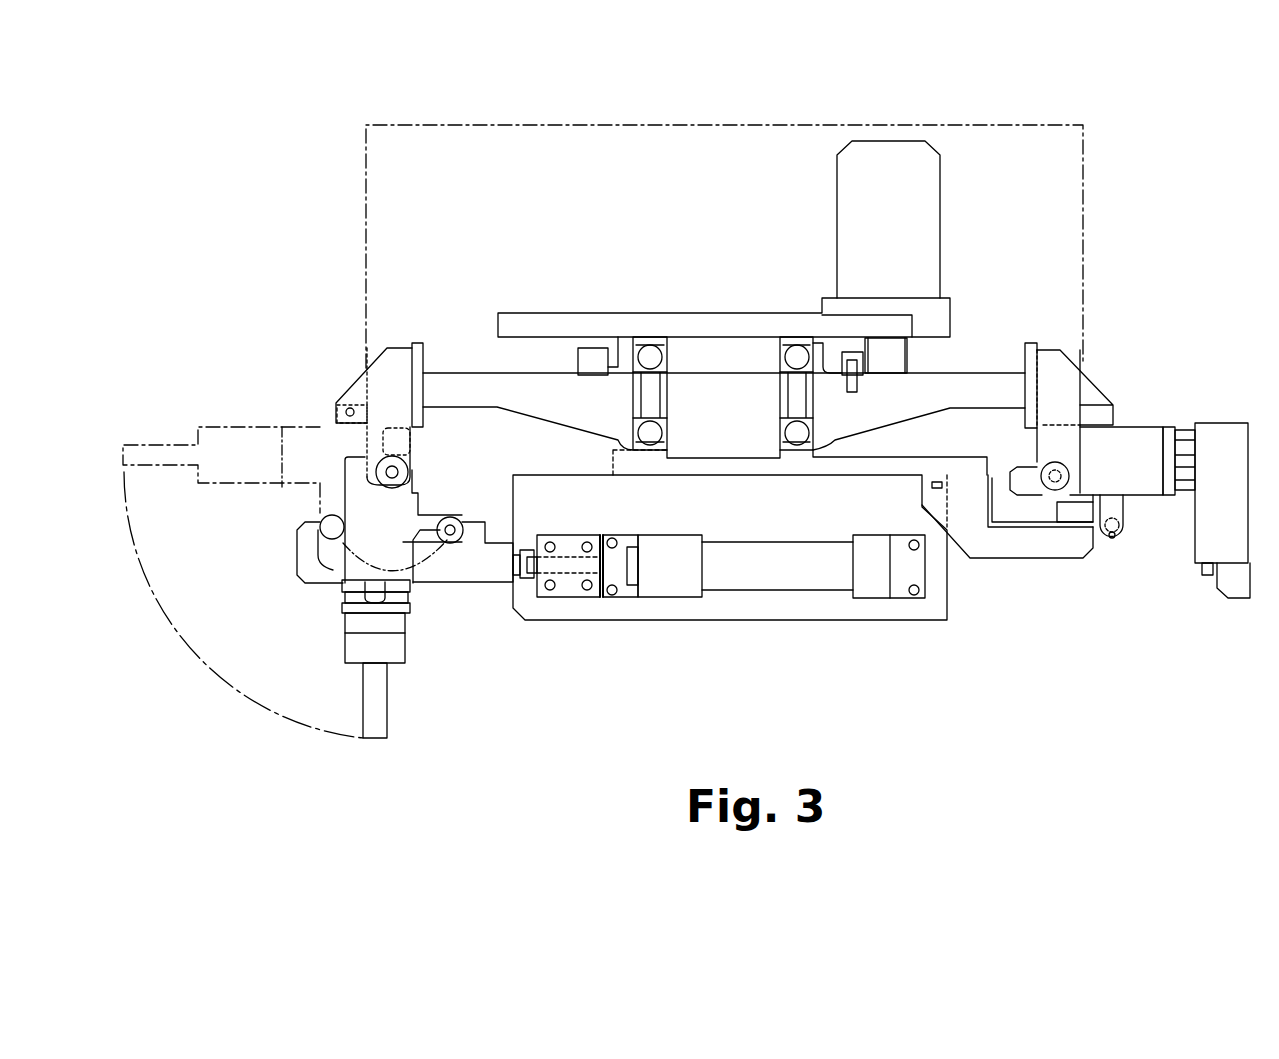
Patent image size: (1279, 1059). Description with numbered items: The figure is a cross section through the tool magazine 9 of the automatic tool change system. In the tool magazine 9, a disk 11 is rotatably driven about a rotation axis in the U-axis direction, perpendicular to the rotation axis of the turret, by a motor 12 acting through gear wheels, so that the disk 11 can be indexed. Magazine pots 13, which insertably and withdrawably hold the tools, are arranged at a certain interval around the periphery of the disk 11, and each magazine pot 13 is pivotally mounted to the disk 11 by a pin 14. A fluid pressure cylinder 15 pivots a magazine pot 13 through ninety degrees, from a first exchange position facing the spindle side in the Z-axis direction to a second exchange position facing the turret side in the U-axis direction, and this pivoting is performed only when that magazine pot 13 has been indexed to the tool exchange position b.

The tool magazine 9 is at (1044, 328).
The disk 11 is at (980, 388).
The motor 12 is at (925, 207).
The magazine pot 13 is at (1142, 485).
The pin 14 is at (1047, 485).
The fluid pressure cylinder 15 is at (802, 573).
The tool exchange position b is at (243, 562).